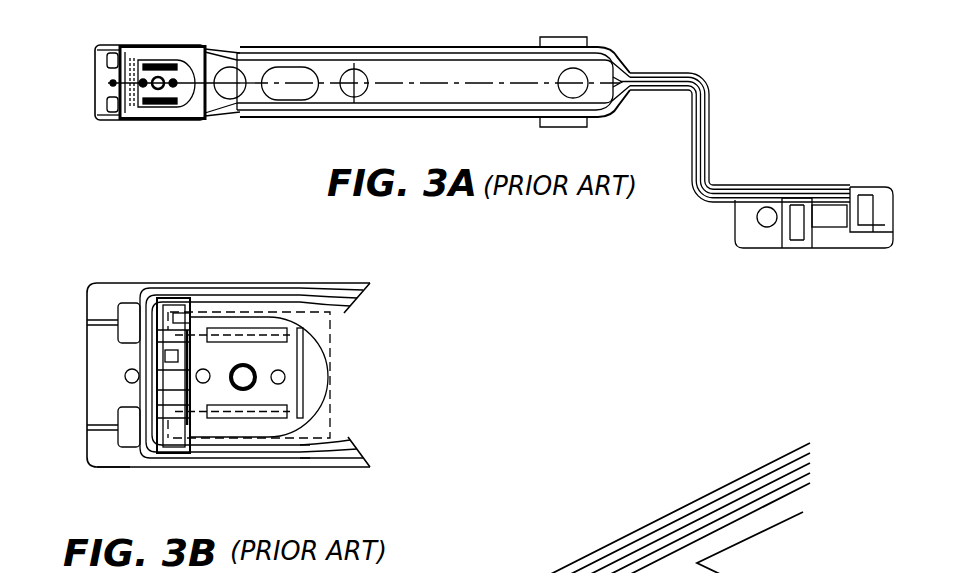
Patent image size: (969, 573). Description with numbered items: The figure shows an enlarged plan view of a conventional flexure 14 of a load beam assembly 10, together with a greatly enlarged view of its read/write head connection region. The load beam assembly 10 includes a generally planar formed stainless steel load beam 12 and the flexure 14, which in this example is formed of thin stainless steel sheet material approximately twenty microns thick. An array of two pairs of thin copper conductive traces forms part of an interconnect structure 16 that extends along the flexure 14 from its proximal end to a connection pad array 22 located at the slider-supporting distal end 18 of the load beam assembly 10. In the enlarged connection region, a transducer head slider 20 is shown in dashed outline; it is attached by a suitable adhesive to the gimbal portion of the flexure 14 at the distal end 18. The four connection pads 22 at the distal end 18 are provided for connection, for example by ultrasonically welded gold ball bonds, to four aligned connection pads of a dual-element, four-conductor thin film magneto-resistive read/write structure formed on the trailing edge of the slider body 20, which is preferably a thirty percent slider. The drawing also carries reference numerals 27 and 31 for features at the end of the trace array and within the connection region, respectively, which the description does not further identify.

In FIG. 3B, the load beam assembly 10 is at (292, 494).
In FIG. 3B, the load beam 12 is at (674, 508).
In FIG. 3A, the flexure 14 is at (298, 143).
In FIG. 3B, the flexure 14 is at (126, 460).
In FIG. 3A, the interconnect structure 16 is at (660, 73).
In FIG. 3B, the distal end 18 is at (101, 267).
In FIG. 3B, the transducer head slider 20 is at (340, 320).
In FIG. 3B, the connection pad array 22 is at (170, 357).
In FIG. 3A, the connector terminal block 27 is at (803, 249).
In FIG. 3B, the slider mounting region 31 is at (318, 331).